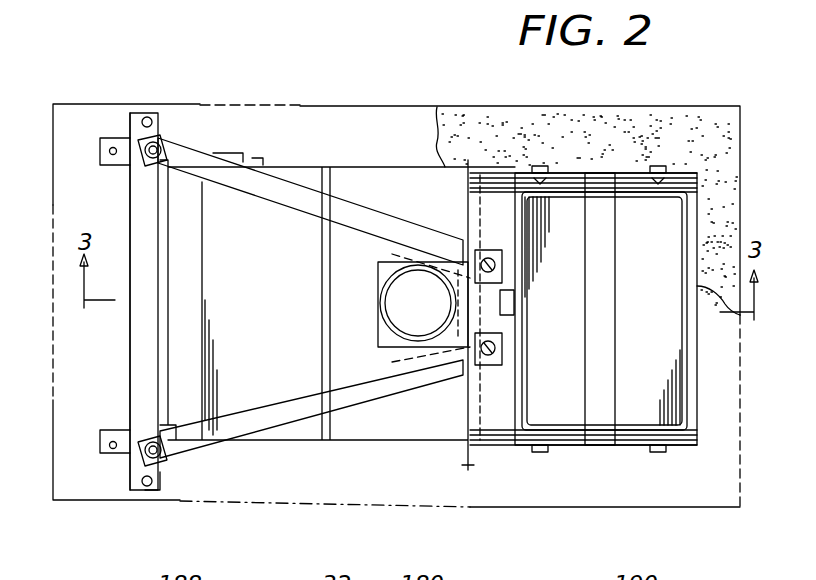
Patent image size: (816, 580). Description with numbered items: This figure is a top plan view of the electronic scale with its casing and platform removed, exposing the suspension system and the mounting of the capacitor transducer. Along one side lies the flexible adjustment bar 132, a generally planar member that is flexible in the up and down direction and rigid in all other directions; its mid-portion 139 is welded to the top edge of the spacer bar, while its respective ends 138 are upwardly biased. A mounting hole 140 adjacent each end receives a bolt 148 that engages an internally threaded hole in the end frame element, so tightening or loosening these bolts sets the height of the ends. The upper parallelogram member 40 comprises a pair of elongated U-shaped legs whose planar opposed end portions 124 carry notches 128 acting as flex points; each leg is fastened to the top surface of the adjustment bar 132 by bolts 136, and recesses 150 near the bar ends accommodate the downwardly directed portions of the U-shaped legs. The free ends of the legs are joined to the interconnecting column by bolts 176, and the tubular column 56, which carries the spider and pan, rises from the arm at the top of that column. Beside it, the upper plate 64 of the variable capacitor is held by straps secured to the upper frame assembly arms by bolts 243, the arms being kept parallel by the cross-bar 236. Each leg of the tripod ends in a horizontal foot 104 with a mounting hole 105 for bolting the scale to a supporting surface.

The upper parallelogram member 40 is at (303, 385).
The tubular column 56 is at (380, 292).
The upper plate 64 is at (650, 228).
The foot 104 is at (102, 139).
The mounting hole 105 is at (110, 152).
The opposed end portions 124 is at (162, 137).
The notches 128 is at (161, 151).
The flexible adjustment bar 132 is at (128, 308).
The bolts 136 is at (150, 165).
The ends of adjustment bar 138 is at (135, 114).
The mid-portion of adjustment bar 139 is at (135, 360).
The mounting hole 140 is at (152, 142).
The bolts 148 is at (147, 117).
The recesses 150 is at (160, 482).
The bolts 176 is at (488, 257).
The cross-bar 236 is at (607, 335).
The bolt 243 is at (654, 167).